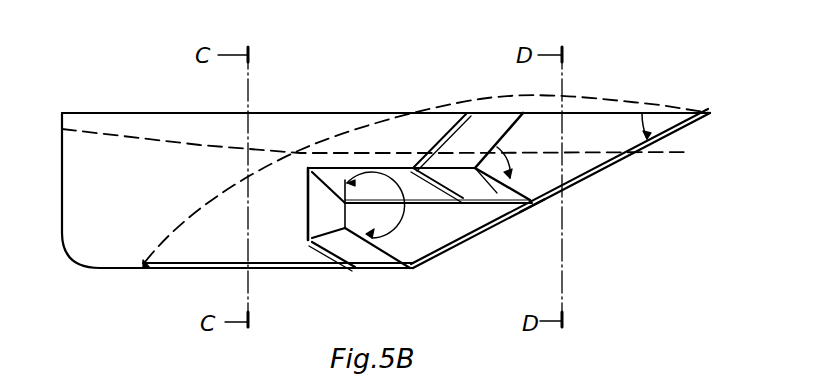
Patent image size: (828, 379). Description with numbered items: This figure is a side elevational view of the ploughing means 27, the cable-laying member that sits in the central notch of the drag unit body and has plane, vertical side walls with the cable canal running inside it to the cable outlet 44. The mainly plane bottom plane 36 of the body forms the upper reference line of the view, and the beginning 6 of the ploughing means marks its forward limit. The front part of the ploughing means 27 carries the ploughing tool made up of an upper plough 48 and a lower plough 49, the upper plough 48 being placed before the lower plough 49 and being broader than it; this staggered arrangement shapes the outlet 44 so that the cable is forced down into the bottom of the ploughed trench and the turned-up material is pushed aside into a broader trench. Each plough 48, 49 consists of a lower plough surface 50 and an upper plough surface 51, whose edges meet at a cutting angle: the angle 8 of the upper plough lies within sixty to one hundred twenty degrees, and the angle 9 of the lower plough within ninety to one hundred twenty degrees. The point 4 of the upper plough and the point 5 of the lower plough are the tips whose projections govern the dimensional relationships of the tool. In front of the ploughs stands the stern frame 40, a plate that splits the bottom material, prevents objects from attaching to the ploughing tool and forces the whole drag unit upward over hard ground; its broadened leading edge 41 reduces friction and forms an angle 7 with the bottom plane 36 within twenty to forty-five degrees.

The bottom plane of the body 36 is at (90, 112).
The cable outlet 44 is at (70, 222).
The ploughing means 27 is at (175, 248).
The point of the lower plough 5 is at (412, 272).
The stern frame 40 is at (578, 168).
The leading edge of the stern frame 41 is at (683, 128).
The angle between stern frame edge and bottom plane 7 is at (663, 123).
The beginning of the ploughing means 6 is at (712, 112).
The lower plough 49 is at (323, 240).
The angle of the lower plough cutting edge 9 is at (343, 228).
The lower plough surface 50 is at (357, 248).
The upper plough surface 51 is at (323, 197).
The angle of the upper plough cutting edge 8 is at (490, 163).
The upper plough 48 is at (517, 215).
The point of the upper plough 4 is at (540, 210).